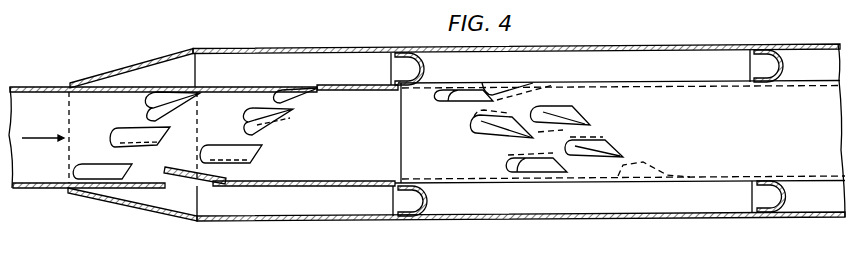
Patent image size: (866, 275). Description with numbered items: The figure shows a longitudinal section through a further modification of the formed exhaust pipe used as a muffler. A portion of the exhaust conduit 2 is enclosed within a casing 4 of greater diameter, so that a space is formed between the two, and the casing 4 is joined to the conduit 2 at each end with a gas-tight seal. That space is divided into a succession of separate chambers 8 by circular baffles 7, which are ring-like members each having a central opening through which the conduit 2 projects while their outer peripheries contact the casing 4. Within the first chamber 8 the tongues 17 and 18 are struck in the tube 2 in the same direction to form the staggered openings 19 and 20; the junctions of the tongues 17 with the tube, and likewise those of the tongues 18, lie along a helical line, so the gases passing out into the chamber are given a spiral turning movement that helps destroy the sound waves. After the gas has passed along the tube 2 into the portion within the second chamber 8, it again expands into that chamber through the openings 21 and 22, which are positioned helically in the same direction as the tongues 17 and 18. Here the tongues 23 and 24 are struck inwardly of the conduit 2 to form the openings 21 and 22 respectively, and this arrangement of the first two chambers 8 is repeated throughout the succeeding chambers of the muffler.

The exhaust conduit 2 is at (44, 189).
The casing 4 is at (707, 49).
The circular baffle 7 is at (430, 54).
The chamber 8 is at (364, 213).
The tongue 17 is at (114, 143).
The tongue 18 is at (265, 127).
The opening 19 is at (133, 126).
The opening 20 is at (256, 110).
The opening 21 is at (480, 136).
The opening 22 is at (548, 112).
The tongue 23 is at (501, 129).
The tongue 24 is at (576, 121).